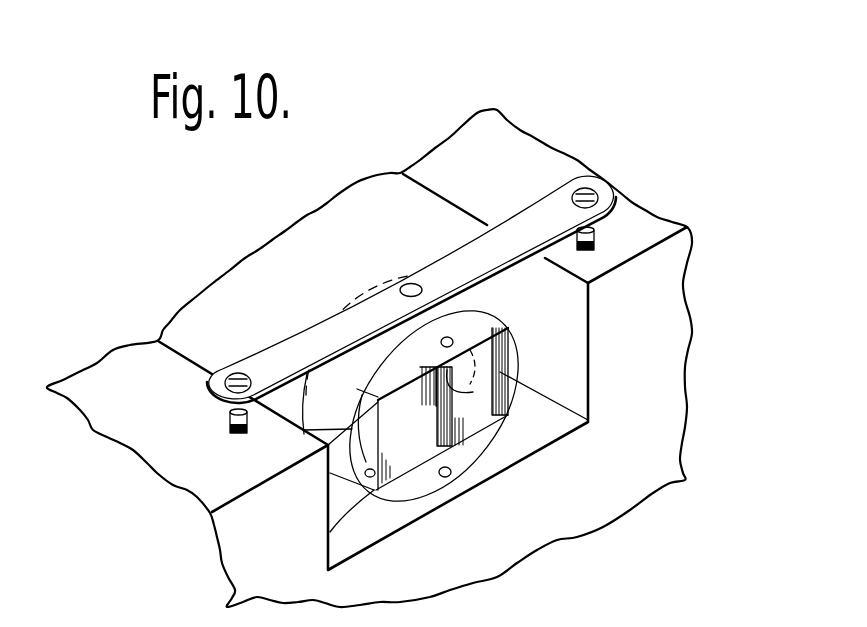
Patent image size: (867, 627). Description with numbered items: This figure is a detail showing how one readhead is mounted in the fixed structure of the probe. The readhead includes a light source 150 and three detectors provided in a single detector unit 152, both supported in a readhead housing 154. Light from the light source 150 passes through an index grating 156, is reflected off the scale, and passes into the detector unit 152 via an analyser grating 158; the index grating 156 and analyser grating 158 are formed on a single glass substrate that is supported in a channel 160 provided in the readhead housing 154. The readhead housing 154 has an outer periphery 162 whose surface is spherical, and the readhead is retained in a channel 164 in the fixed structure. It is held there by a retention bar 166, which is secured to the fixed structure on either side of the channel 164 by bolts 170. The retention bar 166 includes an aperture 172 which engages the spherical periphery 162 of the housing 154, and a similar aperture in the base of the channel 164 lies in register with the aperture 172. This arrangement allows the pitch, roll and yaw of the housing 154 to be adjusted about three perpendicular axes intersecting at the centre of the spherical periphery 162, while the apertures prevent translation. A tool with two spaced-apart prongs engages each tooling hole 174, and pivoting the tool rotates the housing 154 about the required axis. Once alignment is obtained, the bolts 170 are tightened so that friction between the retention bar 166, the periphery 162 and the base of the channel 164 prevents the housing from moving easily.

The light source 150 is at (308, 433).
The detector unit 152 is at (510, 352).
The readhead housing 154 is at (409, 495).
The index grating 156 is at (443, 506).
The analyser grating 158 is at (487, 357).
The channel 160 is at (330, 532).
The outer periphery 162 is at (328, 500).
The channel 164 is at (568, 430).
The retention bar 166 is at (467, 248).
The bolts 170 is at (212, 391).
The aperture 172 is at (400, 287).
The tooling hole 174 is at (452, 474).